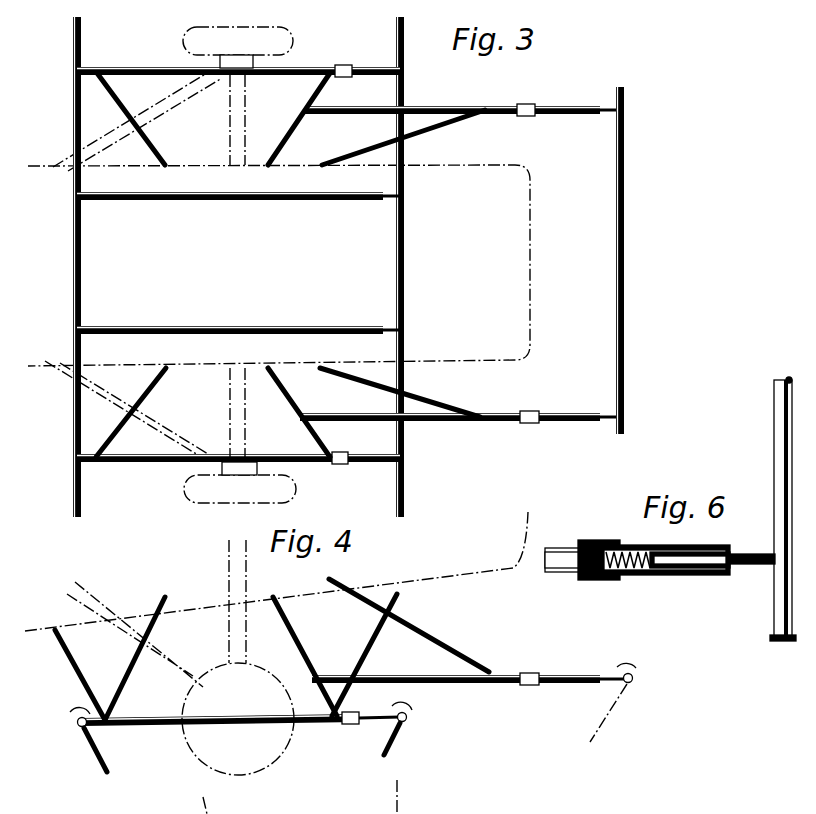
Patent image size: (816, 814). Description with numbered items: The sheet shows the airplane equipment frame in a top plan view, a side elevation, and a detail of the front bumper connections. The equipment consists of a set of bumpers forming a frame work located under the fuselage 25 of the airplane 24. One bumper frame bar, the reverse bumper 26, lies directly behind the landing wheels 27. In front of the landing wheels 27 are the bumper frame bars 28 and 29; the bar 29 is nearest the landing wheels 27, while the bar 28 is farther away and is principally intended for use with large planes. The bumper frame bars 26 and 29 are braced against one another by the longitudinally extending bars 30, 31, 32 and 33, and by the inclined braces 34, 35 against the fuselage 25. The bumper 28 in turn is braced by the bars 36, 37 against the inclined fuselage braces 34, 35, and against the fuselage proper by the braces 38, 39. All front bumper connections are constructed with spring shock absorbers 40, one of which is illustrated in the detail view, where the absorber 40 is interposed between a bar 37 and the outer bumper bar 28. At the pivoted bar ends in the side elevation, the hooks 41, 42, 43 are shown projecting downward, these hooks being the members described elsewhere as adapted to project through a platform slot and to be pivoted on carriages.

In FIG. 4, the airplane 24 is at (432, 789).
In FIG. 3, the fuselage 25 is at (518, 198).
In FIG. 3, the reverse bumper 26 is at (82, 247).
In FIG. 4, the reverse bumper 26 is at (79, 727).
In FIG. 3, the landing wheels 27 is at (293, 38).
In FIG. 4, the landing wheels 27 is at (205, 756).
In FIG. 3, the bumper frame bar 28 is at (625, 222).
In FIG. 4, the bumper frame bar 28 is at (634, 676).
In FIG. 6, the bumper frame bar 28 is at (773, 422).
In FIG. 3, the bumper frame bar 29 is at (403, 275).
In FIG. 4, the bumper frame bar 29 is at (408, 718).
In FIG. 3, the longitudinally extending bar 30 is at (285, 78).
In FIG. 3, the longitudinally extending bar 31 is at (292, 201).
In FIG. 3, the longitudinally extending bar 32 is at (252, 325).
In FIG. 3, the longitudinally extending bar 33 is at (148, 463).
In FIG. 4, the longitudinally extending bar 33 is at (305, 735).
In FIG. 3, the inclined brace 34 is at (152, 141).
In FIG. 4, the inclined brace 34 is at (308, 650).
In FIG. 3, the inclined brace 35 is at (160, 385).
In FIG. 4, the inclined brace 35 is at (132, 679).
In FIG. 3, the bar 36 is at (560, 107).
In FIG. 3, the bar 37 is at (565, 414).
In FIG. 4, the bar 37 is at (565, 681).
In FIG. 3, the brace 38 is at (447, 125).
In FIG. 3, the brace 39 is at (440, 393).
In FIG. 4, the brace 39 is at (440, 640).
In FIG. 6, the spring shock absorber 40 is at (645, 578).
In FIG. 4, the hook 41 is at (103, 773).
In FIG. 4, the hook 42 is at (388, 755).
In FIG. 4, the hook 43 is at (600, 730).